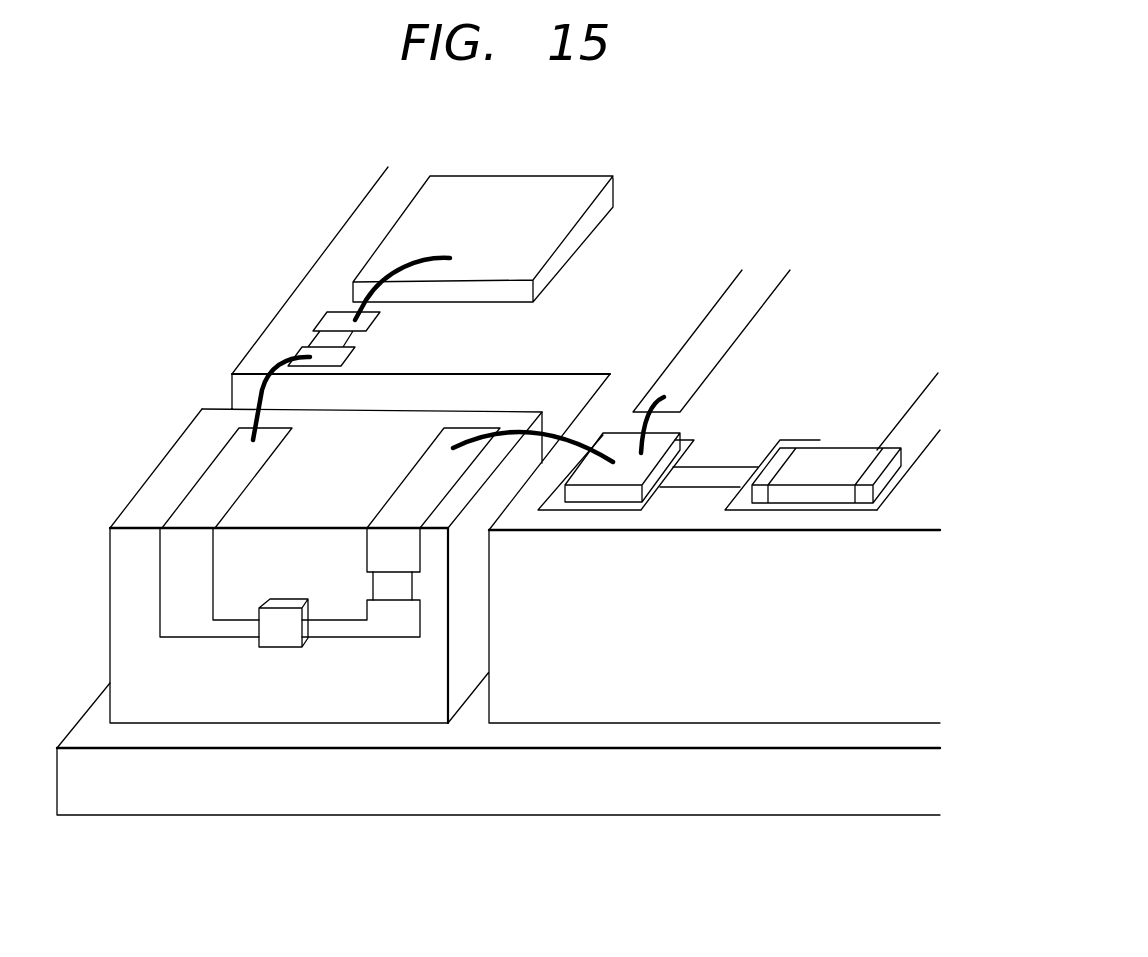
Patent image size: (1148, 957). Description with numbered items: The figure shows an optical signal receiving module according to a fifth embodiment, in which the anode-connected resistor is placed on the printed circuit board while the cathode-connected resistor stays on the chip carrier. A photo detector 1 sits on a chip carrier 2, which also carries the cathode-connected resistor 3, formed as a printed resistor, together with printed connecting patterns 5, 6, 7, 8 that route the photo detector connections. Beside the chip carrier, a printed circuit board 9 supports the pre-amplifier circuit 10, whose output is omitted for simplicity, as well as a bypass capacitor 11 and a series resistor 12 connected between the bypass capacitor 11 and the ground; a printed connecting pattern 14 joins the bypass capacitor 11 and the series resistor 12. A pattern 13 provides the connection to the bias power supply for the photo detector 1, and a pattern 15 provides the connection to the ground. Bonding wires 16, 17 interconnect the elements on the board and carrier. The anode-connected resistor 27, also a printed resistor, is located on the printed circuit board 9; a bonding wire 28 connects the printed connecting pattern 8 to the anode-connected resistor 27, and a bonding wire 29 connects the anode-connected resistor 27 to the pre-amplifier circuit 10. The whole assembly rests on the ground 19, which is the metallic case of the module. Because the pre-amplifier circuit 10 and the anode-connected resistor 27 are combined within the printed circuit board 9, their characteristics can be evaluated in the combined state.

The photo detector 1 is at (280, 628).
The chip carrier 2 is at (160, 700).
The cathode-connected resistor 3 is at (390, 586).
The printed connecting pattern 5 is at (393, 620).
The printed connecting pattern 6 is at (183, 620).
The printed connecting pattern 7 is at (430, 467).
The printed connecting pattern 8 is at (233, 467).
The printed circuit board 9 is at (573, 703).
The pre-amplifier circuit 10 is at (540, 195).
The bypass capacitor 11 is at (600, 493).
The series resistor 12 is at (802, 495).
The pattern of connection to the bias power supply 13 is at (730, 312).
The printed connecting pattern 14 is at (723, 480).
The pattern of connection to the ground 15 is at (918, 424).
The bonding wire 16 is at (633, 412).
The bonding wire 17 is at (555, 428).
The ground (metallic case) 19 is at (812, 800).
The anode-connected resistor 27 is at (330, 340).
The bonding wire 28 is at (253, 392).
The bonding wire 29 is at (383, 270).